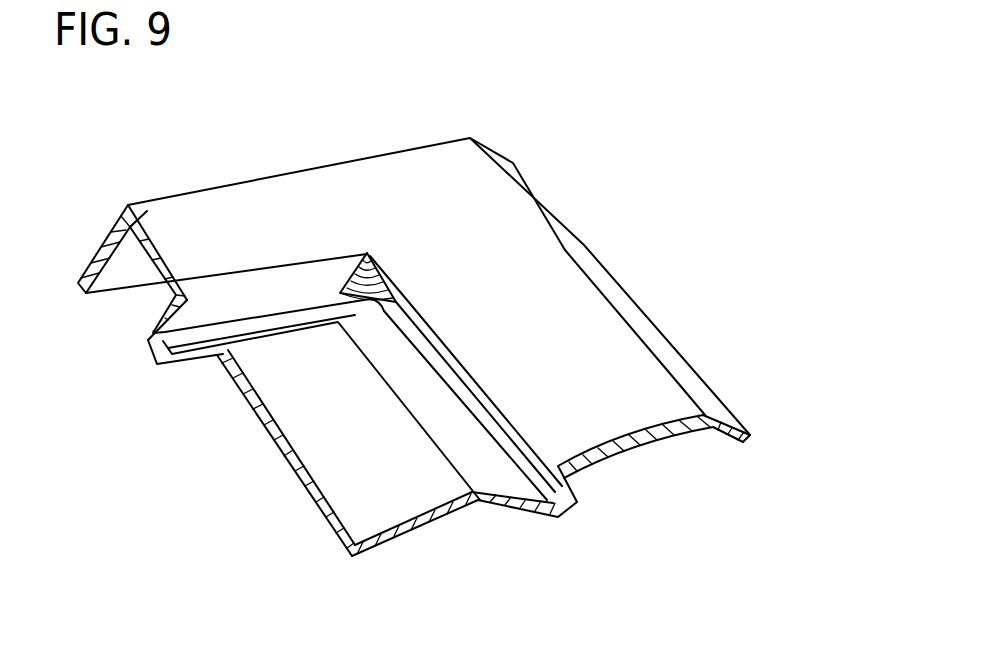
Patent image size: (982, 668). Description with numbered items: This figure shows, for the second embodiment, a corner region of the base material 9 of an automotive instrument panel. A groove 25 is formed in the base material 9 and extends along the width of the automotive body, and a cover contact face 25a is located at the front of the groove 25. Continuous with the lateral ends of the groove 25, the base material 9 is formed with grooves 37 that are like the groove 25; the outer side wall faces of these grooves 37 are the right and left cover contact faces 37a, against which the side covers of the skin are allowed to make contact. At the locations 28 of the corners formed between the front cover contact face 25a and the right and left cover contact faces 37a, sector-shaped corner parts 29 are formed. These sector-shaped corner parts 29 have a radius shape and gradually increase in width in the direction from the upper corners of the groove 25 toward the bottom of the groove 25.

The base material 9 is at (262, 198).
The cover contact face 37a is at (225, 302).
The groove 37 is at (177, 342).
The location of the corner 28 is at (367, 253).
The sector-shaped corner part 29 is at (380, 277).
The cover contact face 25a is at (513, 428).
The groove 25 is at (567, 502).